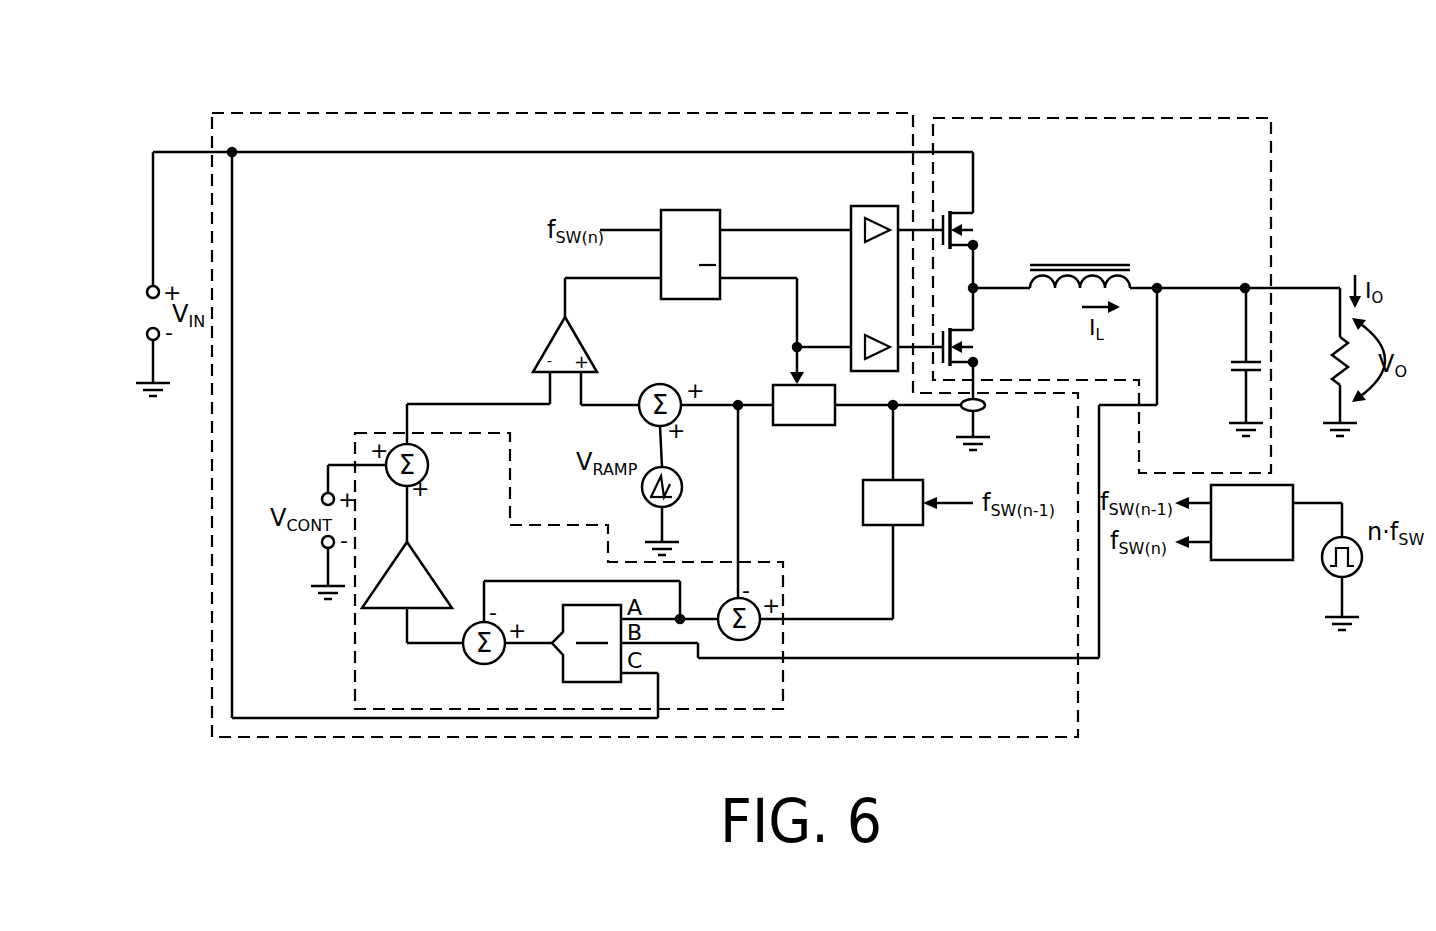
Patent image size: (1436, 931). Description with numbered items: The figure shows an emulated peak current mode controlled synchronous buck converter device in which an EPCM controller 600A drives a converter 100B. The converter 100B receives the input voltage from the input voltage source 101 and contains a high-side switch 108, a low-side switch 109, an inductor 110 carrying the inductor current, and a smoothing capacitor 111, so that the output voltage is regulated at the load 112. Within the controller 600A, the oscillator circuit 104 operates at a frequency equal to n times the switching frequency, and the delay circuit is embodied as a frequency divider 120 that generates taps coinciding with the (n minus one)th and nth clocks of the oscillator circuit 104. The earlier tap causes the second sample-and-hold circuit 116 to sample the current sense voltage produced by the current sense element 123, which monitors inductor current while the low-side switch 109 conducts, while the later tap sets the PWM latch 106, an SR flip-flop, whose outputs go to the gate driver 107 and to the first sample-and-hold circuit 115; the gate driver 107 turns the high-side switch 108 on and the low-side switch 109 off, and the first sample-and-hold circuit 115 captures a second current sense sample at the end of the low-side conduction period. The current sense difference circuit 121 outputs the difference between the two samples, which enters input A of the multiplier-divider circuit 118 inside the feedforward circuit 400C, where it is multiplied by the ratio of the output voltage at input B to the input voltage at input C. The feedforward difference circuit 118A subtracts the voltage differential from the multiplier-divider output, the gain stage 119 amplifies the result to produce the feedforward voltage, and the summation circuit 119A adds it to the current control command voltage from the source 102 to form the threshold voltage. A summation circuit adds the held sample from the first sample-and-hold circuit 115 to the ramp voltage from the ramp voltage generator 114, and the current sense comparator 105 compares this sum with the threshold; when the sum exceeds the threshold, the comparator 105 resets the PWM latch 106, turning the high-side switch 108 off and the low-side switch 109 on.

The input voltage source 101 is at (146, 291).
The current control command voltage source 102 is at (322, 498).
The oscillator circuit 104 is at (1358, 571).
The current sense comparator 105 is at (585, 350).
The PWM latch 106 is at (701, 300).
The gate driver 107 is at (851, 214).
The high-side switch 108 is at (980, 231).
The low-side switch 109 is at (980, 347).
The inductor 110 is at (1112, 264).
The smoothing capacitor 111 is at (1218, 368).
The load 112 is at (1328, 362).
The ramp voltage generator 114 is at (642, 487).
The first sample-and-hold circuit 115 is at (805, 426).
The second sample-and-hold circuit 116 is at (880, 526).
The multiplier-divider circuit 118 is at (563, 668).
The feedforward difference circuit 118A is at (468, 660).
The gain stage 119 is at (428, 572).
The summation circuit 119A is at (424, 454).
The frequency divider 120 is at (1248, 562).
The current sense difference circuit 121 is at (752, 603).
The current sense element 123 is at (986, 408).
The EPCM controller 600A is at (262, 112).
The converter 100B is at (1005, 116).
The feedforward circuit 400C is at (785, 680).